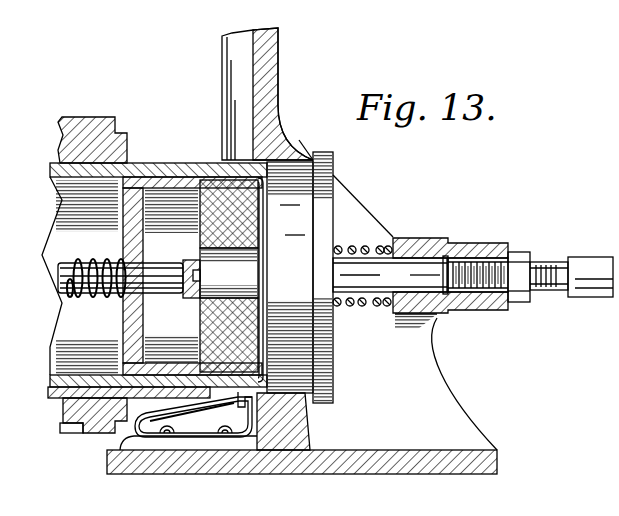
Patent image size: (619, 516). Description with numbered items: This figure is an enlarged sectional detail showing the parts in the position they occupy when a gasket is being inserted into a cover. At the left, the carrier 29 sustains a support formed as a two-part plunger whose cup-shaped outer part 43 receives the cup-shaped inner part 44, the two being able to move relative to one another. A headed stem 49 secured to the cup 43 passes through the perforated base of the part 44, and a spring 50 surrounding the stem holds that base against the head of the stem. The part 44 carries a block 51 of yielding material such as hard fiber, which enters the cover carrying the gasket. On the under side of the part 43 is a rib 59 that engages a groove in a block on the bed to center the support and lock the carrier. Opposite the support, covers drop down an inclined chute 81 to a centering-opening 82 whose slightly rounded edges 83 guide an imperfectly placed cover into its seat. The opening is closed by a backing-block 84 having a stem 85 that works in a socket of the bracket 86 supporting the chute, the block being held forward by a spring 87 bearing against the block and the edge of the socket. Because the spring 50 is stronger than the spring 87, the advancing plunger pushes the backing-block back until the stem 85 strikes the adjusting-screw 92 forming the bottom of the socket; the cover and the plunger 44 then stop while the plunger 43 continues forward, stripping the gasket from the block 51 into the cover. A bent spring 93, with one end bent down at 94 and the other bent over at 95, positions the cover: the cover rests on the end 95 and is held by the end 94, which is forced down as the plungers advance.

The carrier 29 is at (109, 113).
The outer plunger part 43 is at (199, 165).
The inner plunger part 44 is at (123, 329).
The headed stem 49 is at (169, 268).
The spring 50 is at (88, 255).
The block 51 is at (200, 321).
The rib 59 is at (49, 396).
The chute 81 is at (250, 78).
The centering-opening 82 is at (303, 142).
The rounded edges 83 is at (293, 135).
The backing-block 84 is at (290, 277).
The stem 85 is at (390, 275).
The bracket 86 is at (441, 231).
The spring 87 is at (372, 250).
The adjusting-screw 92 is at (484, 262).
The bent spring 93 is at (193, 408).
The bent-down end 94 is at (233, 398).
The bent-over end 95 is at (247, 404).